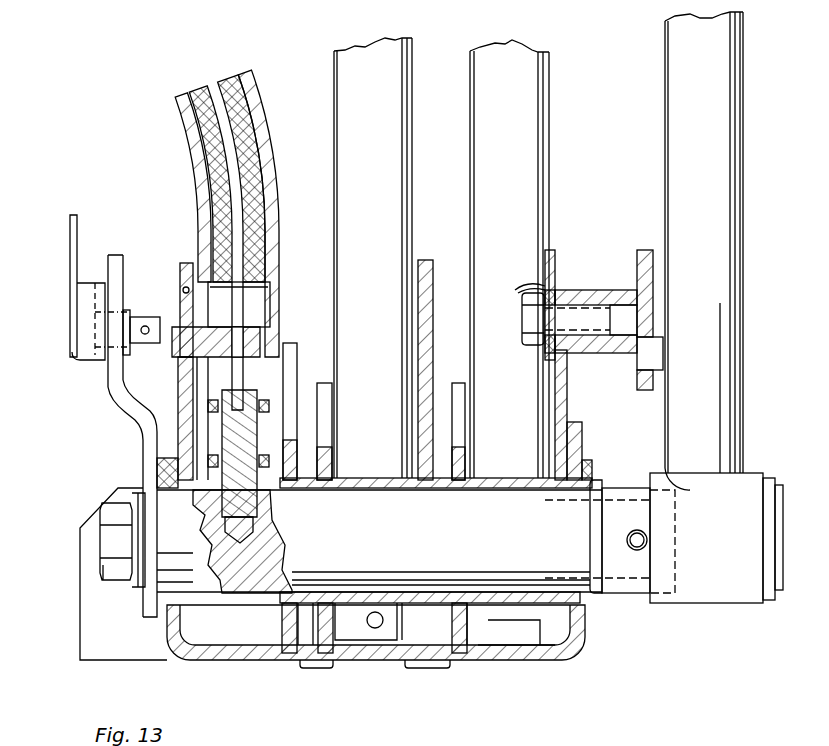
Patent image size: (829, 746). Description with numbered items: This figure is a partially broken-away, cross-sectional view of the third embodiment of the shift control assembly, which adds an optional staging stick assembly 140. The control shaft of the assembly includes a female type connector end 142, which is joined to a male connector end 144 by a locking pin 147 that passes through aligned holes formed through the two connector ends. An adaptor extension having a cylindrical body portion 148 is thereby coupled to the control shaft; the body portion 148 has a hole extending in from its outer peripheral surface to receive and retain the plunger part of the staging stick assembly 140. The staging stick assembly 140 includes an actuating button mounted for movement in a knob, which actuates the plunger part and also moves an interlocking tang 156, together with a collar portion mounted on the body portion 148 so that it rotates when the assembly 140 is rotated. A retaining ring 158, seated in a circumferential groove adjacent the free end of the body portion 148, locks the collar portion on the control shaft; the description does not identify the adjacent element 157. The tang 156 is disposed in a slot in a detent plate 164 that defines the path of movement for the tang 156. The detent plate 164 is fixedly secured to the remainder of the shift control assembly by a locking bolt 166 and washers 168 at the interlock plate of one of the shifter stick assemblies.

The staging stick assembly 140 is at (665, 100).
The female type connector end 142 is at (655, 590).
The male connector end 144 is at (600, 572).
The locking pin 147 is at (645, 538).
The cylindrical body portion 148 is at (630, 490).
The interlocking tang 156 is at (656, 356).
The retaining ring 157 is at (768, 595).
The retaining ring 158 is at (770, 478).
The detent plate 164 is at (646, 250).
The locking bolt 166 is at (522, 322).
The washers 168 is at (518, 292).